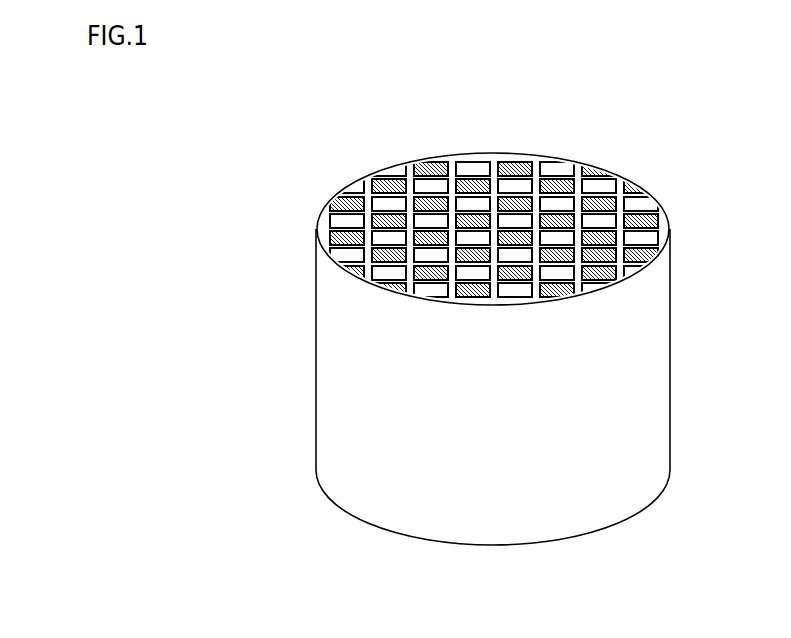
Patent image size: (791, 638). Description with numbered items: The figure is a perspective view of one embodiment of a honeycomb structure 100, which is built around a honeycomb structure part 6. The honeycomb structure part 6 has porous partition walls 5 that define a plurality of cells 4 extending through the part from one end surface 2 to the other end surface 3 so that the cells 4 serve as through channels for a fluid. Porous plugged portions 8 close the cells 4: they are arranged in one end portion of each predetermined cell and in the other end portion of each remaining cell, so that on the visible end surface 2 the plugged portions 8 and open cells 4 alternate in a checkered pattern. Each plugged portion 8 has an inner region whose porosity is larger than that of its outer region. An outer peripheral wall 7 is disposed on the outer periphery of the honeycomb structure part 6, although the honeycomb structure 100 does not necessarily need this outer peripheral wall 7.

The honeycomb structure 100 is at (761, 113).
The one end surface 2 is at (493, 154).
The other end surface 3 is at (485, 545).
The cells 4 is at (603, 219).
The partition walls 5 is at (493, 272).
The honeycomb structure part 6 is at (681, 363).
The outer peripheral wall 7 is at (330, 228).
The plugged portions 8 is at (603, 253).